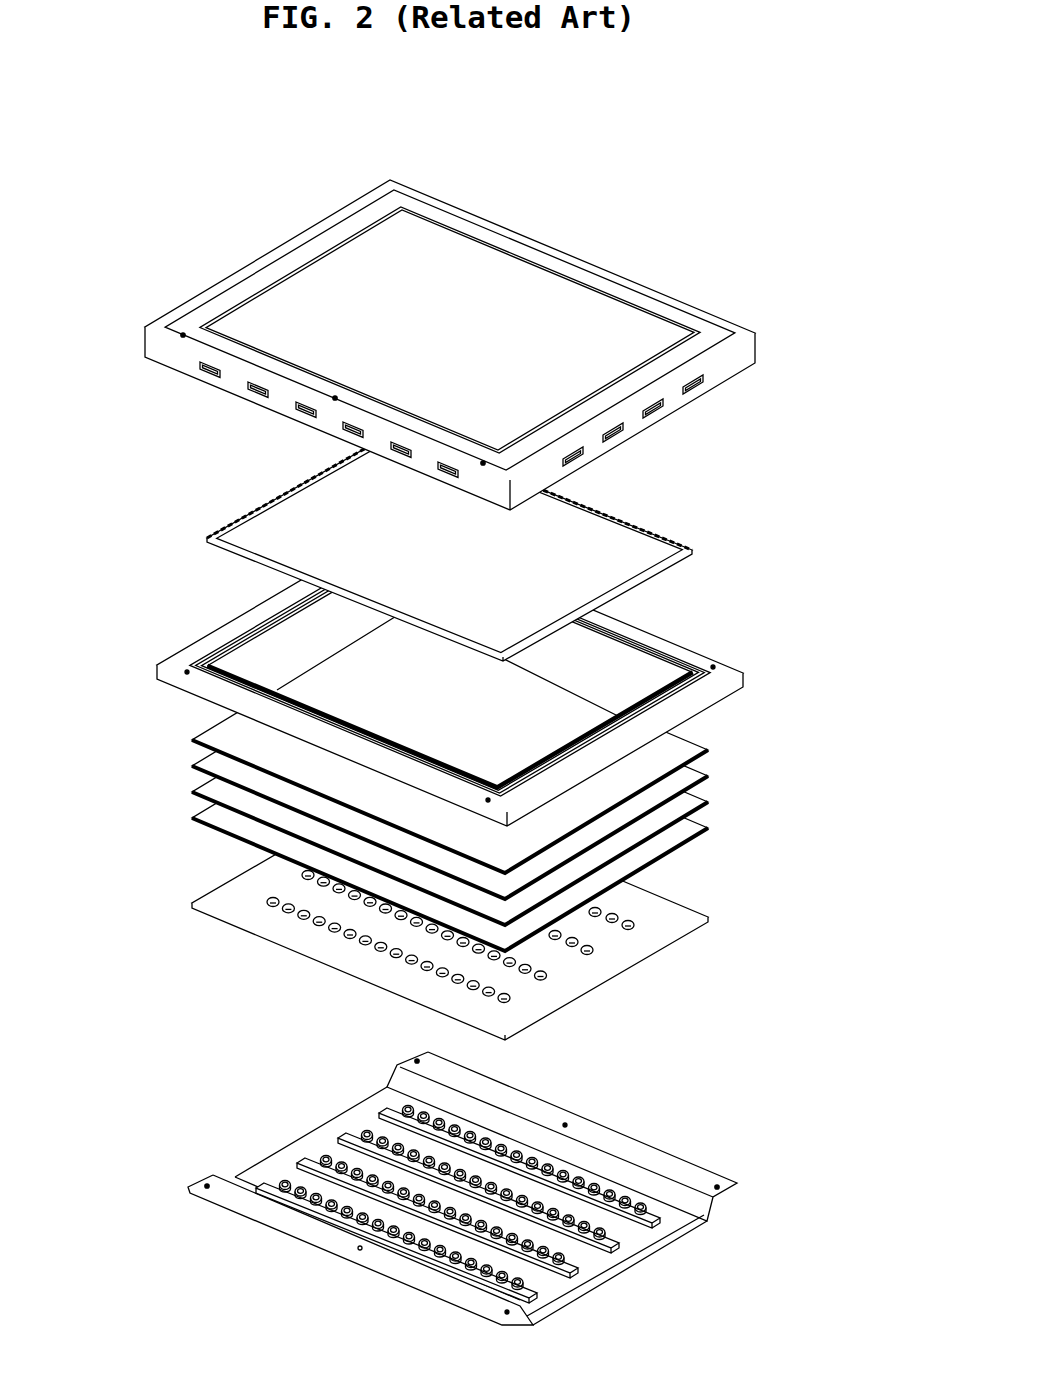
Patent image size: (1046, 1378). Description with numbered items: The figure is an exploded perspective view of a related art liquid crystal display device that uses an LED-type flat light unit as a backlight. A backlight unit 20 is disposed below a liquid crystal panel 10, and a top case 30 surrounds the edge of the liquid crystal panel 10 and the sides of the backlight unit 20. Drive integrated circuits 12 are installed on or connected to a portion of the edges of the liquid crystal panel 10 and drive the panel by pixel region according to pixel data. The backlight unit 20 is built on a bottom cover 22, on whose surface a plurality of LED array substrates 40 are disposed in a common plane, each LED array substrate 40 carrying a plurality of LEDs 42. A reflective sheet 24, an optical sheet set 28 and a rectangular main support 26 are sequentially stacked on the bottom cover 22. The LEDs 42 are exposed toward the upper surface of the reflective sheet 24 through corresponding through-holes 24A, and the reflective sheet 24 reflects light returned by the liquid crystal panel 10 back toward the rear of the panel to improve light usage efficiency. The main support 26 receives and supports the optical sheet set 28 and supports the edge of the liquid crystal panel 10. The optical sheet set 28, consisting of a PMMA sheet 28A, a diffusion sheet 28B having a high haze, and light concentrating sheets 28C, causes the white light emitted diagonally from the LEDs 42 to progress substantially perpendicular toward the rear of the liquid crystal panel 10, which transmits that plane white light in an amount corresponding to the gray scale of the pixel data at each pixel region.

The liquid crystal panel 10 is at (471, 546).
The drive integrated circuits 12 is at (597, 543).
The backlight unit 20 is at (808, 805).
The bottom cover 22 is at (717, 1212).
The reflective sheet 24 is at (473, 918).
The through-hole 24A is at (587, 953).
The main support 26 is at (742, 670).
The optical sheet set 28 is at (430, 784).
The PMMA sheet 28A is at (195, 818).
The diffusion sheet 28B is at (193, 793).
The light concentrating sheets 28C is at (190, 740).
The top case 30 is at (752, 353).
The LED array substrates 40 is at (657, 1212).
The LEDs 42 is at (625, 1195).